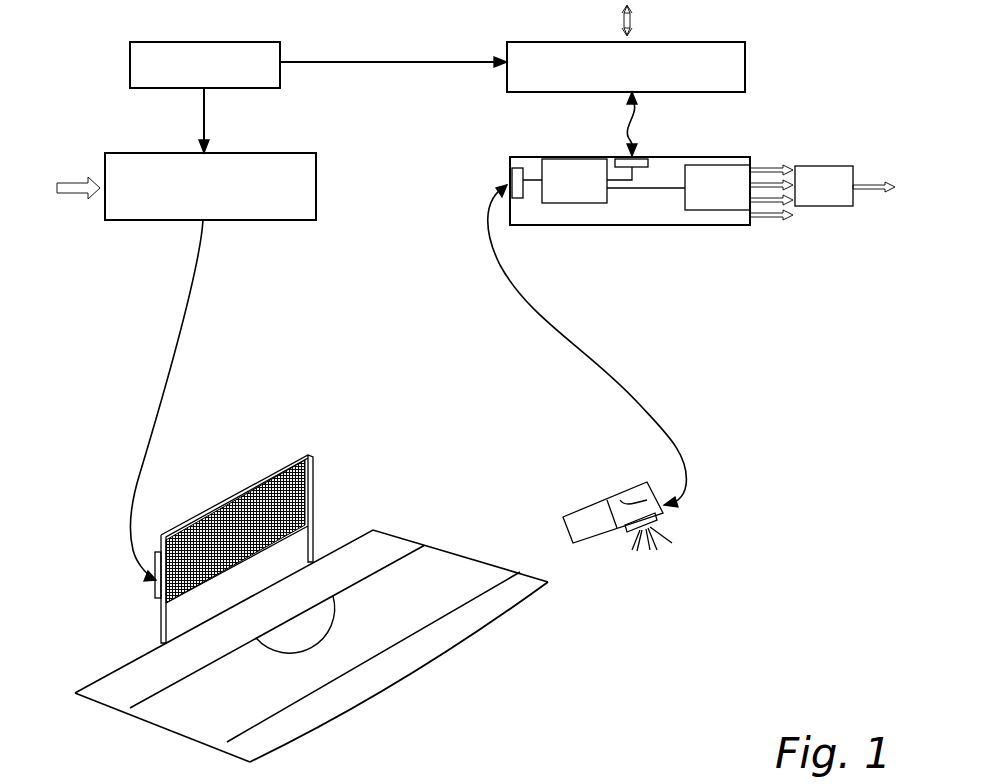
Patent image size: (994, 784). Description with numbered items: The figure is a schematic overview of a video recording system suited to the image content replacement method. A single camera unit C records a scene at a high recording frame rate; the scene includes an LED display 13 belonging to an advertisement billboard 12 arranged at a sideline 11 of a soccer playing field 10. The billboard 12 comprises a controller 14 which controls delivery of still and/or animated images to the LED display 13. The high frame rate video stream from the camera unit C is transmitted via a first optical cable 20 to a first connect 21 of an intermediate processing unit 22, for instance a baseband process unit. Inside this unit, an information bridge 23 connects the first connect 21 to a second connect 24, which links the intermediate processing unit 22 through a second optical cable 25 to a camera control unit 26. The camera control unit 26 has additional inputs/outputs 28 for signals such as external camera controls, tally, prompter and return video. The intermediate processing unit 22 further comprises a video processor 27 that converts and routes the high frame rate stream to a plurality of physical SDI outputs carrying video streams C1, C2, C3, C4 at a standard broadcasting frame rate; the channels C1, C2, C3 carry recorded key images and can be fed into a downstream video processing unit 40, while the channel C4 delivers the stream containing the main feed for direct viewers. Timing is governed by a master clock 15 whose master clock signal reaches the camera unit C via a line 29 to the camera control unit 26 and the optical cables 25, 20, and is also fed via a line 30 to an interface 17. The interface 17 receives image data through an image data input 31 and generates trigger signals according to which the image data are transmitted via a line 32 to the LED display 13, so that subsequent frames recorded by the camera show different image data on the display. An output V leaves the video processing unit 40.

The soccer playing field 10 is at (460, 653).
The sideline 11 is at (112, 672).
The advertisement billboard 12 is at (233, 497).
The LED display 13 is at (302, 500).
The controller 14 is at (153, 593).
The master clock 15 is at (275, 78).
The interface 17 is at (305, 190).
The first optical cable 20 is at (598, 358).
The first connect 21 is at (510, 173).
The intermediate processing unit 22 is at (662, 213).
The information bridge 23 is at (580, 193).
The second connect 24 is at (645, 158).
The second optical cable 25 is at (622, 128).
The camera control unit 26 is at (748, 60).
The video processor 27 is at (722, 200).
The additional inputs/outputs 28 is at (633, 22).
The line 29 is at (441, 60).
The line 30 is at (206, 118).
The image data input 31 is at (75, 185).
The line 32 is at (180, 340).
The video processing unit 40 is at (830, 197).
The camera unit C is at (593, 513).
The video stream channel C1 is at (772, 168).
The video stream channel C2 is at (768, 188).
The video stream channel C3 is at (773, 197).
The video stream channel C4 is at (776, 210).
The video output V is at (880, 182).